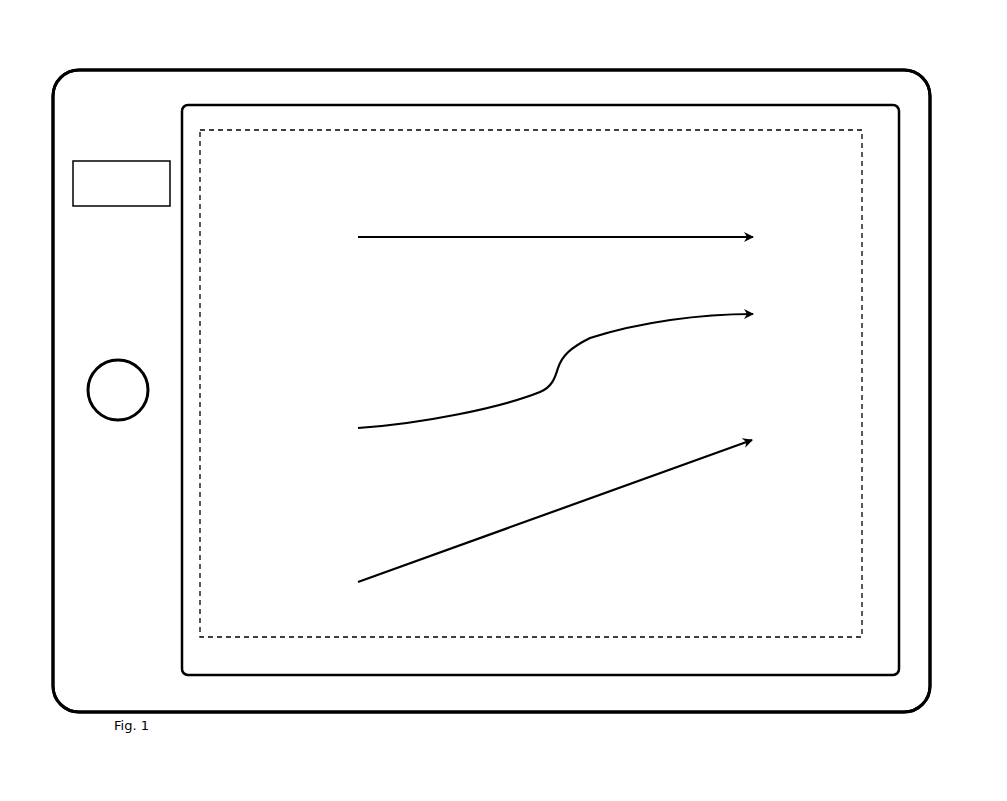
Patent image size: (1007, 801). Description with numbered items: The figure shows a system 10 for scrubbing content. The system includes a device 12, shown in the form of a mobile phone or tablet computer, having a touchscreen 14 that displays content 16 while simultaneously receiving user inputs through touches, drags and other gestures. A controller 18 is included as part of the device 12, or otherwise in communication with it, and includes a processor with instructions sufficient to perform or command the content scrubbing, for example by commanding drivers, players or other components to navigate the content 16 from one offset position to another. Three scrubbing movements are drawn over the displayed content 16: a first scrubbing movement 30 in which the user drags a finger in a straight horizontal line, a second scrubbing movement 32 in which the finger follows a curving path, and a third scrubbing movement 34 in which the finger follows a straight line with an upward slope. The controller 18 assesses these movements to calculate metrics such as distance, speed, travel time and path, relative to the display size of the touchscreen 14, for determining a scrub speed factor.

The system 10 is at (714, 57).
The device 12 is at (341, 70).
The touchscreen 14 is at (442, 105).
The content 16 is at (275, 381).
The controller 18 is at (100, 161).
The first scrubbing movement 30 is at (606, 217).
The second scrubbing movement 32 is at (537, 358).
The third scrubbing movement 34 is at (553, 494).